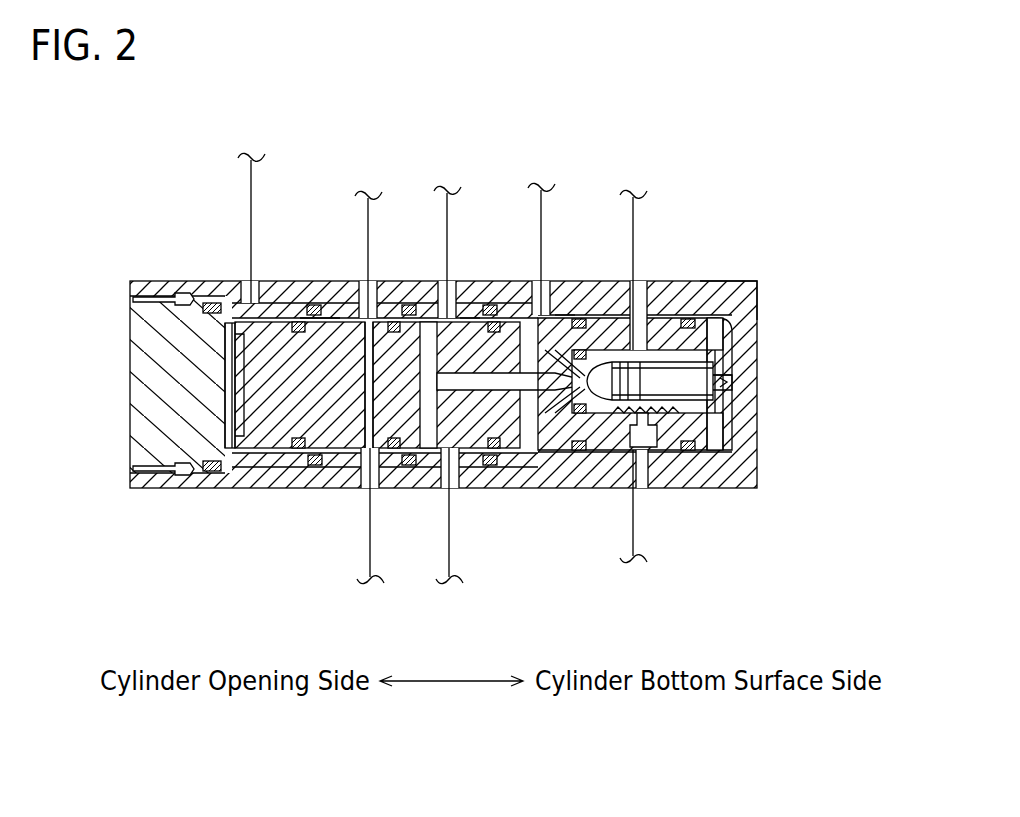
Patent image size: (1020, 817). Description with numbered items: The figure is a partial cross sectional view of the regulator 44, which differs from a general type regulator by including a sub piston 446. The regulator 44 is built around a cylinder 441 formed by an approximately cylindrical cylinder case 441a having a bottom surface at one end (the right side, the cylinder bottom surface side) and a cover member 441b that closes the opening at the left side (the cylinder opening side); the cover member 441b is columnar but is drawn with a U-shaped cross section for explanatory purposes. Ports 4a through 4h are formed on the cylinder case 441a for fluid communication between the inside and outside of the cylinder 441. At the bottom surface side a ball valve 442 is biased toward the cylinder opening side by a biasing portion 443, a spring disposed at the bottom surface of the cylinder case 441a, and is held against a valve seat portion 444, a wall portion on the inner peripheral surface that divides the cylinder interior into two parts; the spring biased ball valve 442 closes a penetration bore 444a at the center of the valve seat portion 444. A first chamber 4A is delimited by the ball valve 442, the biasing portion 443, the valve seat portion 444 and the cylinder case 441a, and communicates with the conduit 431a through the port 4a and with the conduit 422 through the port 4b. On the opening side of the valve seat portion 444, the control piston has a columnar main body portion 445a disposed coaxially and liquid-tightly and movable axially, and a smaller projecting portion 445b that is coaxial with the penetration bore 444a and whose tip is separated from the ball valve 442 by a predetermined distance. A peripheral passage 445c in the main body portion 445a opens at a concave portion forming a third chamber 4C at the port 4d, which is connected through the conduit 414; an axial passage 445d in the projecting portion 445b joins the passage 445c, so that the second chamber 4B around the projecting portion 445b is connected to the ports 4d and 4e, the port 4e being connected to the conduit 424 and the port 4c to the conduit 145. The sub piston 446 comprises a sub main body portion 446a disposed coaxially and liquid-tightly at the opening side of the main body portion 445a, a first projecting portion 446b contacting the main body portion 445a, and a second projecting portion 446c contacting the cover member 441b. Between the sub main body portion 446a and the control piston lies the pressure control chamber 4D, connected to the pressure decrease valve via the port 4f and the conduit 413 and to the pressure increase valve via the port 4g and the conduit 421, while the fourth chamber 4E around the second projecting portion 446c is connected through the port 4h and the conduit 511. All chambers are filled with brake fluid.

The regulator 44 is at (463, 390).
The cylinder 441 is at (776, 307).
The cylinder case 441a is at (724, 290).
The cover member 441b is at (147, 333).
The ball valve 442 is at (642, 458).
The biasing portion 443 is at (710, 420).
The valve seat portion 444 is at (590, 302).
The penetration bore 444a is at (612, 402).
The main body portion 445a is at (382, 478).
The projecting portion 445b is at (570, 425).
The passage 445c is at (432, 445).
The passage 445d is at (500, 415).
The sub piston 446 is at (218, 479).
The sub main body portion 446a is at (264, 412).
The first projecting portion 446b is at (305, 440).
The second projecting portion 446c is at (222, 386).
The conduit 511 is at (252, 187).
The conduit 413 is at (369, 215).
The conduit 414 is at (449, 220).
The conduit 145 is at (543, 218).
The conduit 431a is at (635, 237).
The conduit 421 is at (365, 560).
The conduit 424 is at (443, 560).
The conduit 422 is at (630, 535).
The port 4a is at (640, 302).
The port 4b is at (640, 490).
The port 4c is at (533, 302).
The port 4d is at (437, 302).
The port 4e is at (450, 490).
The port 4f is at (360, 300).
The port 4g is at (350, 484).
The port 4h is at (247, 302).
The first chamber 4A is at (705, 367).
The second chamber 4B is at (558, 302).
The third chamber 4C is at (468, 302).
The pressure control chamber 4D is at (320, 302).
The fourth chamber 4E is at (225, 305).